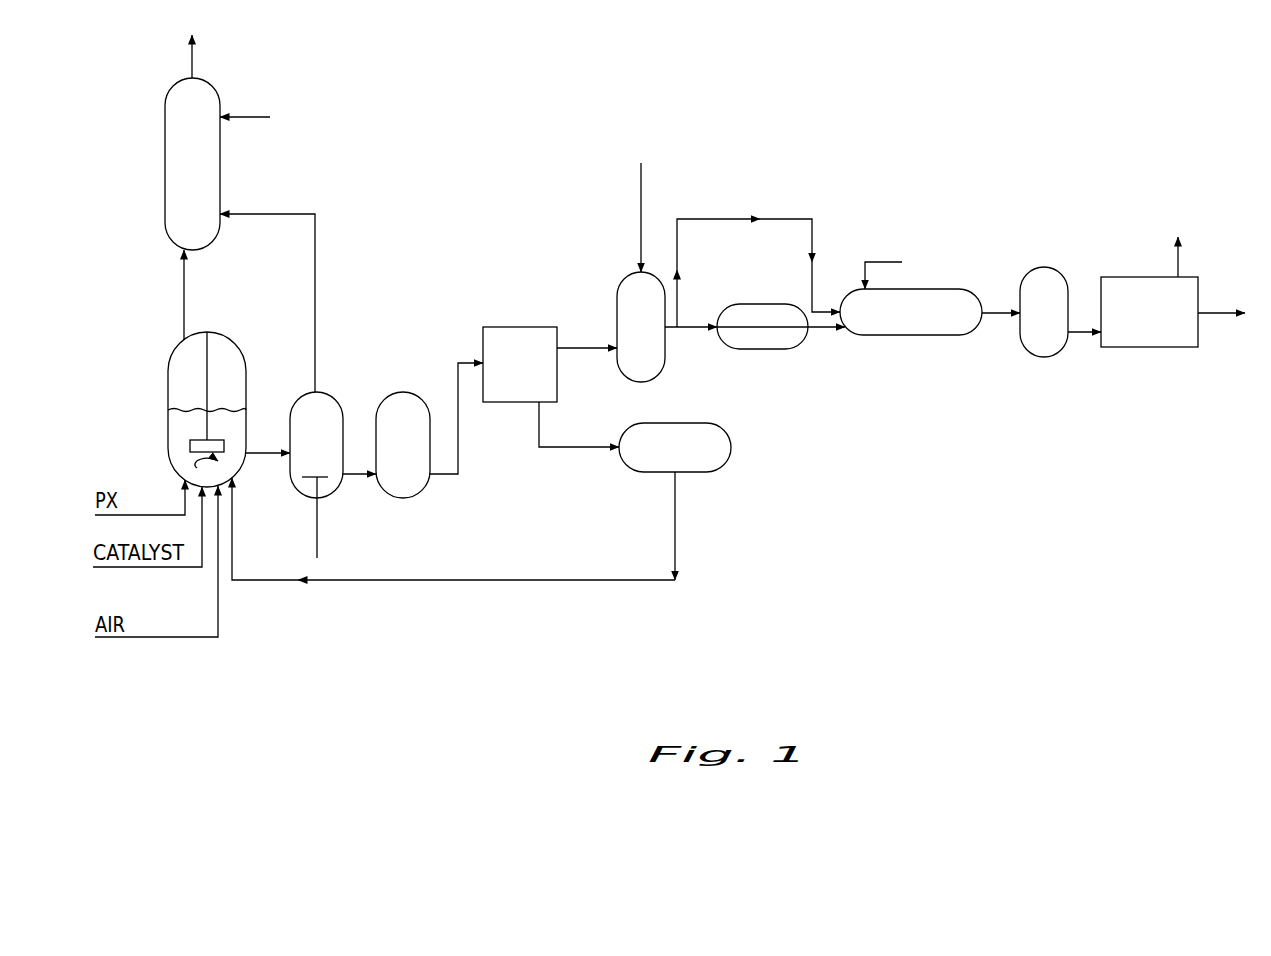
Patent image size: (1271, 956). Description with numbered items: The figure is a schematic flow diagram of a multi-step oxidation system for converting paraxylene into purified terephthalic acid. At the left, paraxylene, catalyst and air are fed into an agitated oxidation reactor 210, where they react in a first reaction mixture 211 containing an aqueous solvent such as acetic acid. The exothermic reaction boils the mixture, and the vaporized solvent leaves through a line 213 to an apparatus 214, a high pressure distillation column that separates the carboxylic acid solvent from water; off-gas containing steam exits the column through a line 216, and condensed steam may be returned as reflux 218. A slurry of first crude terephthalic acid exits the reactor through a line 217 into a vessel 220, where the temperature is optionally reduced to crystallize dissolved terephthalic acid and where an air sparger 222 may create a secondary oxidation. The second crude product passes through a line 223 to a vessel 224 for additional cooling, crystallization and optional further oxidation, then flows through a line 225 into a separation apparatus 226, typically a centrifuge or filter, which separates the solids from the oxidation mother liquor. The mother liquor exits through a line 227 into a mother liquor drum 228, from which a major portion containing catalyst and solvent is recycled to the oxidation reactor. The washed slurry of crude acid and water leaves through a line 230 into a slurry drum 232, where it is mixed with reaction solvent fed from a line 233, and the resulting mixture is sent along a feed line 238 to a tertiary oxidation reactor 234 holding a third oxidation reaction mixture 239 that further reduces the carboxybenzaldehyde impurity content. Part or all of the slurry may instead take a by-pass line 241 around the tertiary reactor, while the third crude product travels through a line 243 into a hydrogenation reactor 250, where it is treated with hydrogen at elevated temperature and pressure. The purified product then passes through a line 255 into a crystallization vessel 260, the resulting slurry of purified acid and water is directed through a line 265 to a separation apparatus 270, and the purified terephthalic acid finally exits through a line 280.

The oxidation reactor 210 is at (168, 371).
The first reaction mixture 211 is at (172, 428).
The line 213 is at (184, 286).
The apparatus 214 is at (165, 146).
The line 216 is at (192, 55).
The line 217 is at (260, 453).
The reflux 218 is at (245, 112).
The vessel 220 is at (299, 391).
The air sparger 222 is at (316, 243).
The line 223 is at (350, 476).
The vessel 224 is at (393, 391).
The line 225 is at (460, 362).
The separation apparatus 226 is at (507, 326).
The line 227 is at (556, 449).
The mother liquor drum 228 is at (697, 474).
The line 230 is at (602, 347).
The slurry drum 232 is at (617, 282).
The line 233 is at (641, 174).
The tertiary oxidation reactor 234 is at (788, 350).
The solution feed line 238 is at (672, 330).
The third oxidation reaction mixture 239 is at (745, 349).
The by-pass line 241 is at (790, 218).
The line 243 is at (821, 332).
The hydrogenation reactor 250 is at (899, 336).
The line 255 is at (990, 315).
The crystallization vessel 260 is at (1050, 266).
The line 265 is at (1075, 334).
The separation apparatus 270 is at (1131, 276).
The line 280 is at (1222, 310).